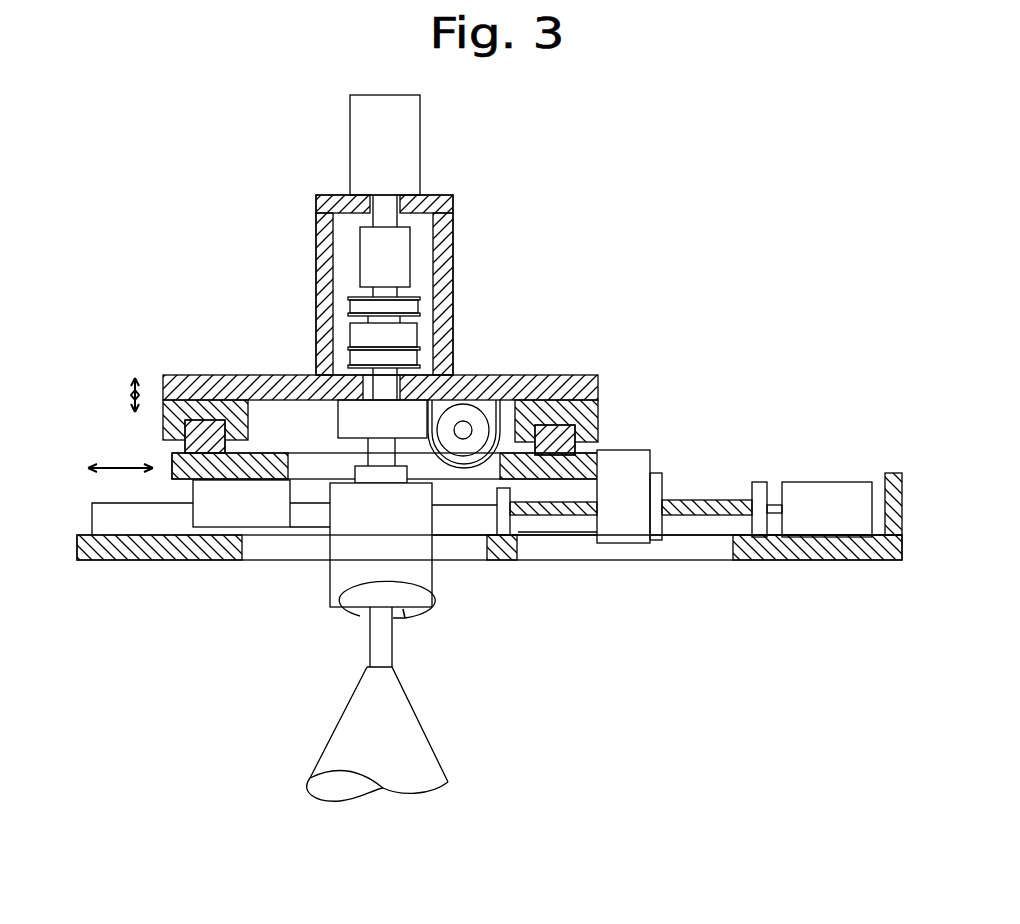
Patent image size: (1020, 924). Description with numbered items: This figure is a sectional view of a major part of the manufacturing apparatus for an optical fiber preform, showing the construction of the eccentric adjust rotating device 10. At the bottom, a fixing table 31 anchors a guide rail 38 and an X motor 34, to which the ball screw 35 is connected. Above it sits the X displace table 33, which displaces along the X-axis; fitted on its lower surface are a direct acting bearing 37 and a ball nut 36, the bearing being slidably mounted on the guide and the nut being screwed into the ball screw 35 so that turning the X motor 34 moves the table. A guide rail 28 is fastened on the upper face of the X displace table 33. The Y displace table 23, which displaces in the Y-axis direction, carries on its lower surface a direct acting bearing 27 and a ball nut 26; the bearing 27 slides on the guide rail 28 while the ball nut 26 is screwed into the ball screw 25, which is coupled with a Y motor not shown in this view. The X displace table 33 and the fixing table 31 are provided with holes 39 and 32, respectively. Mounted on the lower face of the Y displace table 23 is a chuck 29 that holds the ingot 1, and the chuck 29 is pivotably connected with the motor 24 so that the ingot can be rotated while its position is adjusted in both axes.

The ingot 1 is at (410, 743).
The eccentric adjust rotating device 10 is at (676, 90).
The Y displace table 23 is at (268, 385).
The motor 24 is at (402, 153).
The ball screw 25 is at (463, 428).
The ball nut 26 is at (498, 417).
The direct acting bearing 27 is at (207, 410).
The guide rail 28 is at (217, 433).
The chuck 29 is at (418, 577).
The fixing table 31 is at (797, 552).
The hole 32 is at (280, 547).
The X displace table 33 is at (188, 478).
The X motor 34 is at (827, 493).
The ball screw 35 is at (717, 507).
The ball nut 36 is at (628, 472).
The direct acting bearing 37 is at (230, 508).
The guide rail 38 is at (115, 522).
The hole 39 is at (472, 470).